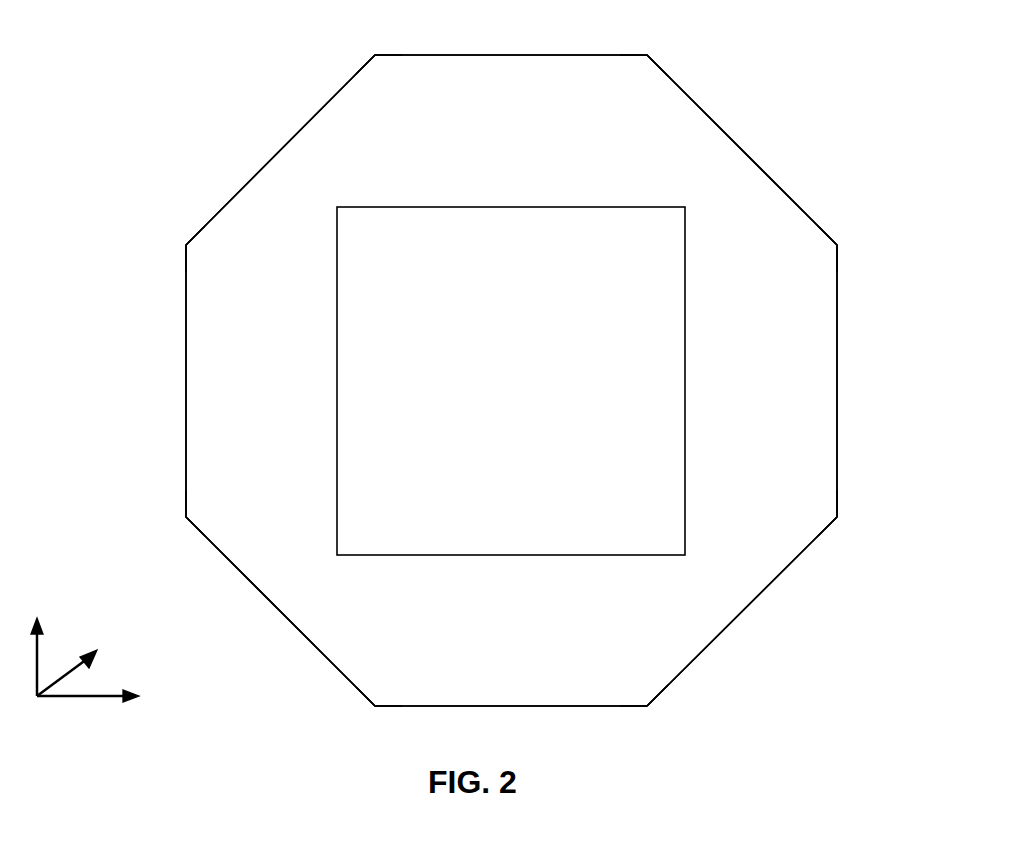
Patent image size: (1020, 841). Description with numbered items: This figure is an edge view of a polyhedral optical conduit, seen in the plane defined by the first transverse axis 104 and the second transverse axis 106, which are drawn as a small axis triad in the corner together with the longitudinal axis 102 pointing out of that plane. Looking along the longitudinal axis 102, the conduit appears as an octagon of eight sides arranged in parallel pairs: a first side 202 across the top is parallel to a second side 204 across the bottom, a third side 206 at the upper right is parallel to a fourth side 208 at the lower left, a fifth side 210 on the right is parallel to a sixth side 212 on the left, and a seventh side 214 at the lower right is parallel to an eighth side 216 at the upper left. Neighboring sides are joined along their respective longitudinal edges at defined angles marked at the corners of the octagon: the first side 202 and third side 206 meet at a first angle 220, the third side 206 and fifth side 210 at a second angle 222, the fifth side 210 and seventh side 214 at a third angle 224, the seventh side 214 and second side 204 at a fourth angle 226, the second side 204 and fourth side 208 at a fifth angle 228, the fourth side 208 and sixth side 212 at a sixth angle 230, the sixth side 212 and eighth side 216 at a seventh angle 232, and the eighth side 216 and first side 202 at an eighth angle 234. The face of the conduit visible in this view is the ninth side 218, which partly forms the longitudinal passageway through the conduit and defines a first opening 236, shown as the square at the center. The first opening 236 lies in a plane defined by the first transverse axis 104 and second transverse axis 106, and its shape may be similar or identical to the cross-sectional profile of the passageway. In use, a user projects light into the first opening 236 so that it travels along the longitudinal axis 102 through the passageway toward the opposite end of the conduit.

The longitudinal axis 102 is at (91, 665).
The first transverse axis 104 is at (38, 642).
The second transverse axis 106 is at (120, 695).
The first side 202 is at (515, 55).
The second side 204 is at (470, 702).
The third side 206 is at (733, 127).
The fourth side 208 is at (257, 588).
The fifth side 210 is at (840, 375).
The sixth side 212 is at (177, 352).
The seventh side 214 is at (755, 600).
The eighth side 216 is at (232, 195).
The ninth side 218 is at (521, 154).
The first angle 220 is at (637, 62).
The second angle 222 is at (820, 256).
The third angle 224 is at (823, 512).
The fourth angle 226 is at (645, 702).
The fifth angle 228 is at (382, 702).
The sixth angle 230 is at (190, 513).
The seventh angle 232 is at (197, 247).
The eighth angle 234 is at (380, 60).
The first opening 236 is at (512, 387).